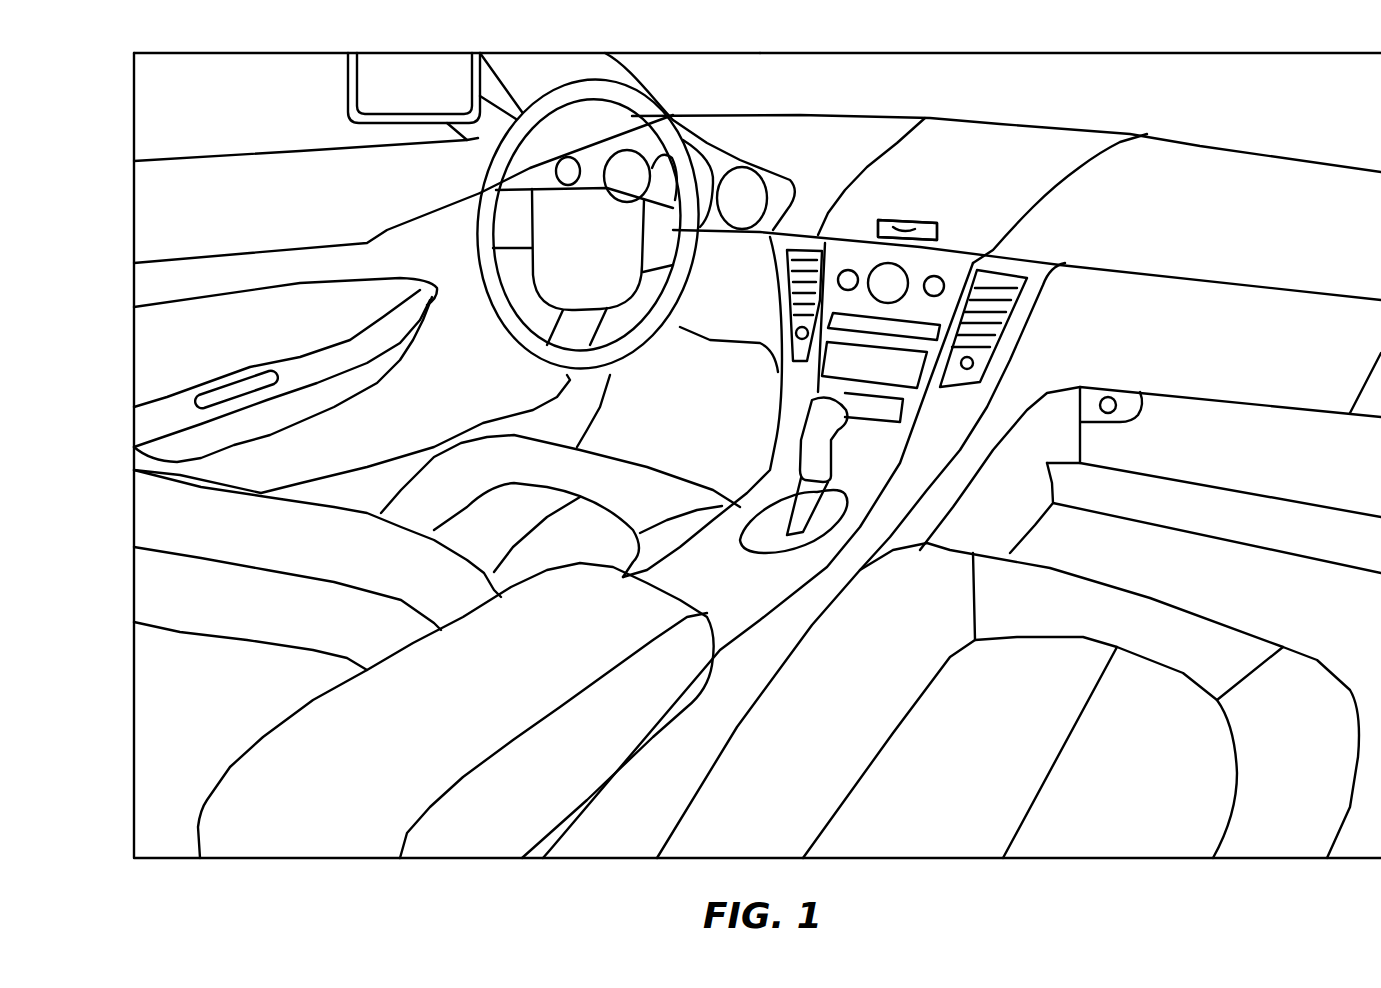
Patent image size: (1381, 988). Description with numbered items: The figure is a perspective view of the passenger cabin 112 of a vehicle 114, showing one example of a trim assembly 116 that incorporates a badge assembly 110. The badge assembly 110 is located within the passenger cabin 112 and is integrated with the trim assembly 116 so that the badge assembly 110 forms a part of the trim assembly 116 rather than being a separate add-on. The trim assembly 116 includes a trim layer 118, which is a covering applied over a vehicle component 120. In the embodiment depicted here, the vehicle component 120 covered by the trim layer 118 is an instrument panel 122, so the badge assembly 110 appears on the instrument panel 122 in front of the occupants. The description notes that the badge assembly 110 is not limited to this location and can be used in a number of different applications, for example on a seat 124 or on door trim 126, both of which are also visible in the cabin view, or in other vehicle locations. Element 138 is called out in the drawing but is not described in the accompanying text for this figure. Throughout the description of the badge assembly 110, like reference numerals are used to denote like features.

The badge assembly 110 is at (913, 233).
The passenger cabin 112 is at (1021, 75).
The vehicle 114 is at (1116, 77).
The trim assembly 116 is at (857, 187).
The trim layer 118 is at (883, 173).
The vehicle component 120 is at (942, 147).
The instrument panel 122 is at (1157, 161).
The seat 124 is at (148, 505).
The door trim 126 is at (147, 227).
The sensor housing 138 is at (937, 232).